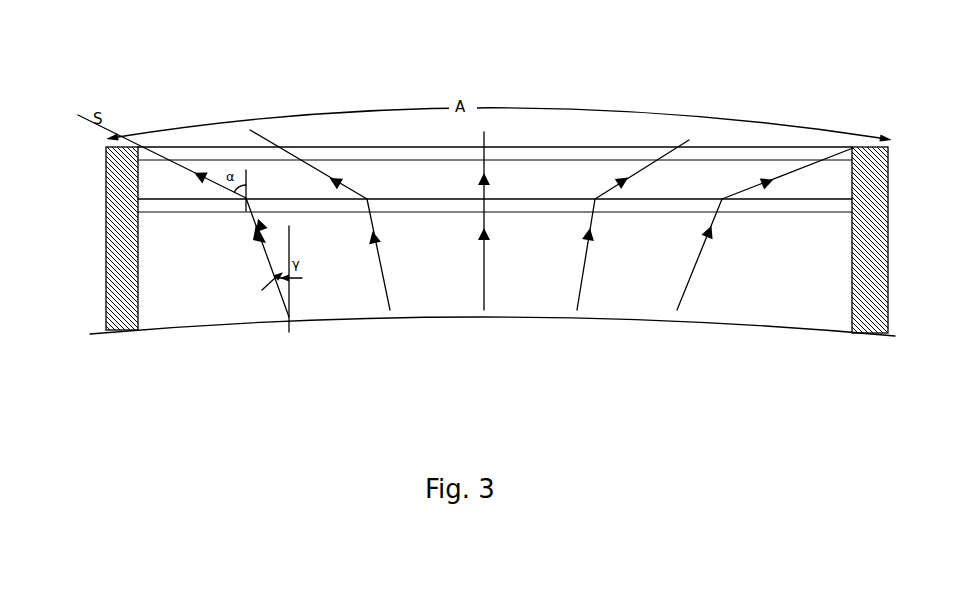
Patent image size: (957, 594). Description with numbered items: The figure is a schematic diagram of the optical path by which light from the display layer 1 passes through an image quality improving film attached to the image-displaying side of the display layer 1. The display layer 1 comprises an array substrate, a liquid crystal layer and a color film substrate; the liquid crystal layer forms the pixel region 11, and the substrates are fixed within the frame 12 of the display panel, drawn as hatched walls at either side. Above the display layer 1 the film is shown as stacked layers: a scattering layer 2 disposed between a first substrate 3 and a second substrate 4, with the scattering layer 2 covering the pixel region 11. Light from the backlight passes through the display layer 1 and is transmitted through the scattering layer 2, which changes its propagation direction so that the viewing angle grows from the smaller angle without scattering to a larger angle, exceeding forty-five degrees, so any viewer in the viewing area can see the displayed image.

The display layer 1 is at (492, 285).
The pixel region 11 is at (172, 397).
The frame 12 is at (138, 265).
The scattering layer 2 is at (178, 184).
The first substrate 3 is at (145, 159).
The second substrate 4 is at (146, 210).